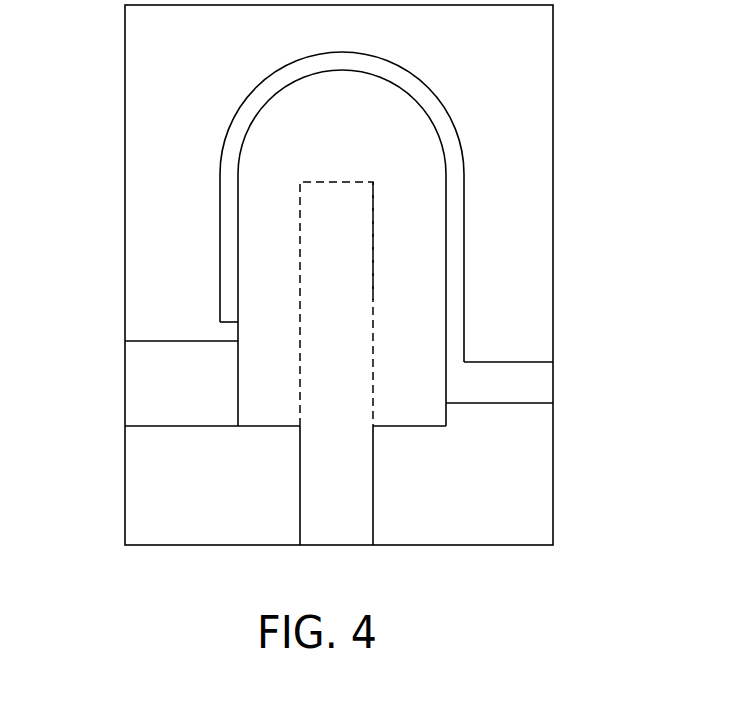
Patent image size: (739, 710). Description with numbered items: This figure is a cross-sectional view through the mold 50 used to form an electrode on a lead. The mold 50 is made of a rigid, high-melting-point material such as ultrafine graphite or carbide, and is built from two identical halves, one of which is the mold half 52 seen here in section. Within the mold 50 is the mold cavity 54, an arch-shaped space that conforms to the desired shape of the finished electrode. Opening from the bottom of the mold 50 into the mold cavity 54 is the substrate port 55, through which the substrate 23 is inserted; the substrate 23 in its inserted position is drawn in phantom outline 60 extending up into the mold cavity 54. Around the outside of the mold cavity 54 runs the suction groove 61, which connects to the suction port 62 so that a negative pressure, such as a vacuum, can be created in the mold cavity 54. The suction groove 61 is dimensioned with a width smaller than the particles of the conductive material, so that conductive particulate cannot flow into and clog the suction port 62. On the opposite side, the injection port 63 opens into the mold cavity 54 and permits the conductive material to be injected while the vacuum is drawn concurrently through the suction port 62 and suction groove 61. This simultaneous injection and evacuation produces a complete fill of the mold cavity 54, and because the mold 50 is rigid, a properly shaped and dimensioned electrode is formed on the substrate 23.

The mold 50 is at (325, 322).
The mold half 52 is at (542, 530).
The mold cavity 54 is at (442, 241).
The substrate port 55 is at (355, 505).
The phantom outline 60 is at (375, 200).
The suction groove 61 is at (231, 138).
The suction port 62 is at (533, 393).
The injection port 63 is at (148, 371).
The substrate 23 is at (367, 208).